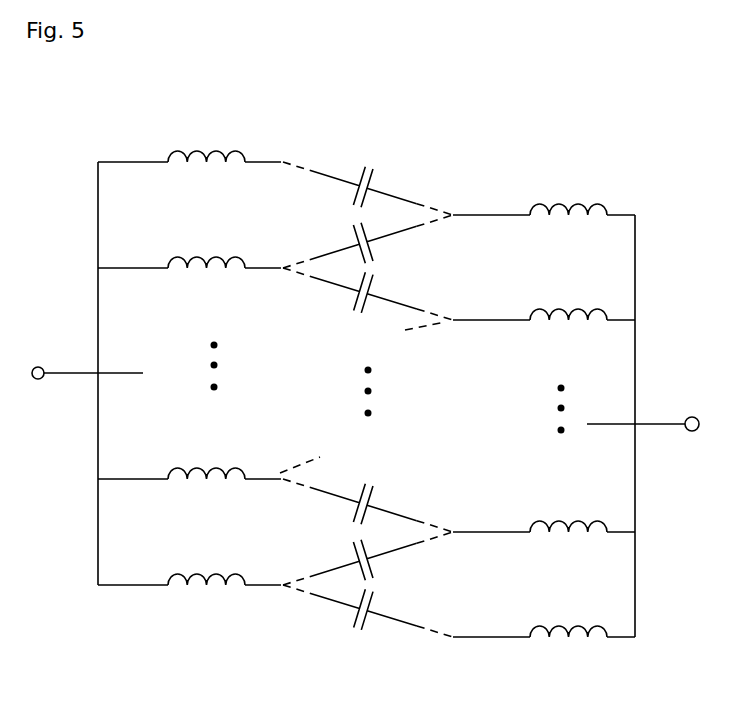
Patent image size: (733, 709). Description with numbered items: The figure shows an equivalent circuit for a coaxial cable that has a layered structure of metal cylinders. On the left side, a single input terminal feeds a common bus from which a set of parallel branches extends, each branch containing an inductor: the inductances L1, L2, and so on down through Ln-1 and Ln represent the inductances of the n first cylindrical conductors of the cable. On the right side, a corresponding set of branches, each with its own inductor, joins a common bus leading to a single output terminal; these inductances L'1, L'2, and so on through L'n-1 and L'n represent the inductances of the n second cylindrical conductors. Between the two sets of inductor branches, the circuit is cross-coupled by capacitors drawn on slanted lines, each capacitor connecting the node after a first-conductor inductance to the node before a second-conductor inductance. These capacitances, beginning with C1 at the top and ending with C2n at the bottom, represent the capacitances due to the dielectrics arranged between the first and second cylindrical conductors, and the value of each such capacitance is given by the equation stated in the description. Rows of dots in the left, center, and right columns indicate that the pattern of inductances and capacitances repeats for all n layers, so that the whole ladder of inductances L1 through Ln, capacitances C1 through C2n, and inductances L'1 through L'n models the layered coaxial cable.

The inductance of first cylindrical conductor L1 is at (189, 131).
The inductance of first cylindrical conductor L2 is at (189, 239).
The inductance of first cylindrical conductor Ln-1 is at (189, 447).
The inductance of first cylindrical conductor Ln is at (189, 555).
The inductance of second cylindrical conductor L'1 is at (544, 184).
The inductance of second cylindrical conductor L'2 is at (544, 289).
The inductance of second cylindrical conductor L'n-1 is at (544, 501).
The inductance of second cylindrical conductor L'n is at (544, 606).
The capacitance due to dielectric C1 is at (368, 174).
The capacitance due to dielectric C2n is at (368, 626).